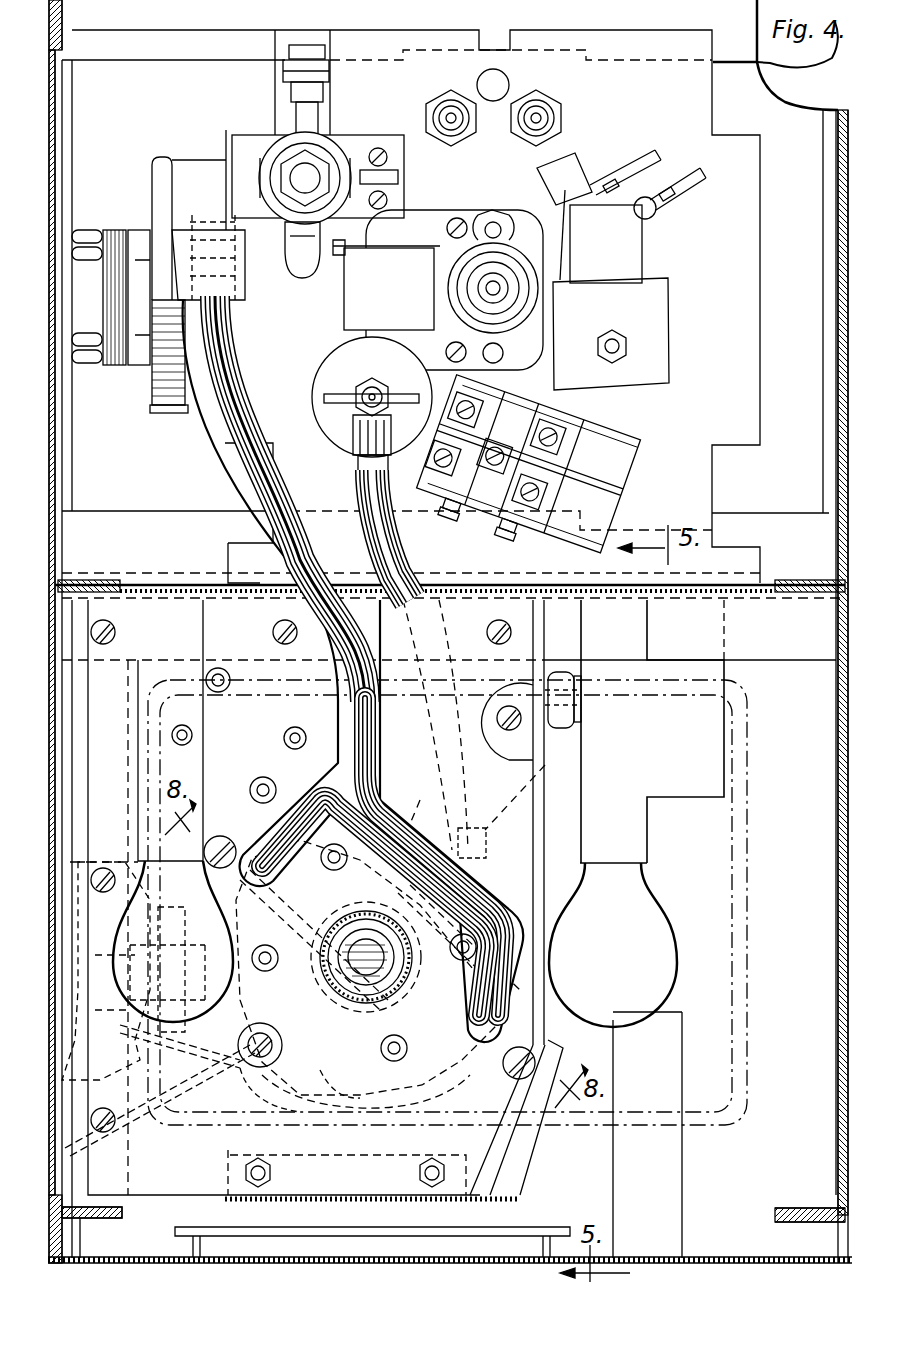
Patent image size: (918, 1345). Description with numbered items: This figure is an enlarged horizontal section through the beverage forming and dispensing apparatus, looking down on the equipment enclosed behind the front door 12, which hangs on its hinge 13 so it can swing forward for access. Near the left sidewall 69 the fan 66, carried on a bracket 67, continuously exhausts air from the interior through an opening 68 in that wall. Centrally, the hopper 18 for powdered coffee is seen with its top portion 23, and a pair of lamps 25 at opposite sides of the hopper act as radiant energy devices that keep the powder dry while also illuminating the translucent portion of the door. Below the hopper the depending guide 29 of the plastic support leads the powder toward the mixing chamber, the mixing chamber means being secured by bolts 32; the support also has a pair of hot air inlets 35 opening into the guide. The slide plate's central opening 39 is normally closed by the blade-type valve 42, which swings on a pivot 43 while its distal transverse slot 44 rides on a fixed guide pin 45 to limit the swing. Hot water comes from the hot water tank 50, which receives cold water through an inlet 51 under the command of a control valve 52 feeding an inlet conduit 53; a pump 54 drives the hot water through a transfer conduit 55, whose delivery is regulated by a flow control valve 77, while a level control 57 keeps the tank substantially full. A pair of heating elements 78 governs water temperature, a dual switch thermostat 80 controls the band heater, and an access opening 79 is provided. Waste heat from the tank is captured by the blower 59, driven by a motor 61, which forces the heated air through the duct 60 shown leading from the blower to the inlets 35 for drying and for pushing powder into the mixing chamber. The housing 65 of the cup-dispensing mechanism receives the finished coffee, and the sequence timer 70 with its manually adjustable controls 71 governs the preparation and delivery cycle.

The front door 12 is at (772, 1262).
The hinge 13 is at (800, 1228).
The hopper 18 is at (340, 945).
The top portion 23 is at (745, 972).
The lamps 25 is at (646, 922).
The guide 29 is at (446, 1120).
The bolts 32 is at (212, 862).
The hot air inlets 35 is at (258, 840).
The central opening 39 is at (385, 975).
The blade-type valve 42 is at (437, 792).
The pivot 43 is at (498, 720).
The transverse slot 44 is at (331, 1108).
The guide pin 45 is at (252, 1075).
The hot water tank 50 is at (280, 343).
The inlet 51 is at (287, 82).
The control valve 52 is at (335, 140).
The inlet conduit 53 is at (300, 268).
The pump 54 is at (448, 220).
The transfer conduit 55 is at (422, 566).
The level control 57 is at (655, 335).
The blower 59 is at (160, 413).
The flexible hose 60 is at (305, 565).
The motor 61 is at (143, 238).
The housing 65 is at (512, 1185).
The fan 66 is at (148, 1120).
The bracket 67 is at (188, 1076).
The opening 68 is at (62, 1075).
The left sidewall 69 is at (52, 754).
The sequence timer 70 is at (686, 785).
The manually adjustable controls 71 is at (562, 722).
The flow control valve 77 is at (330, 378).
The heating elements 78 is at (456, 118).
The access opening 79 is at (497, 82).
The dual switch thermostat 80 is at (568, 432).